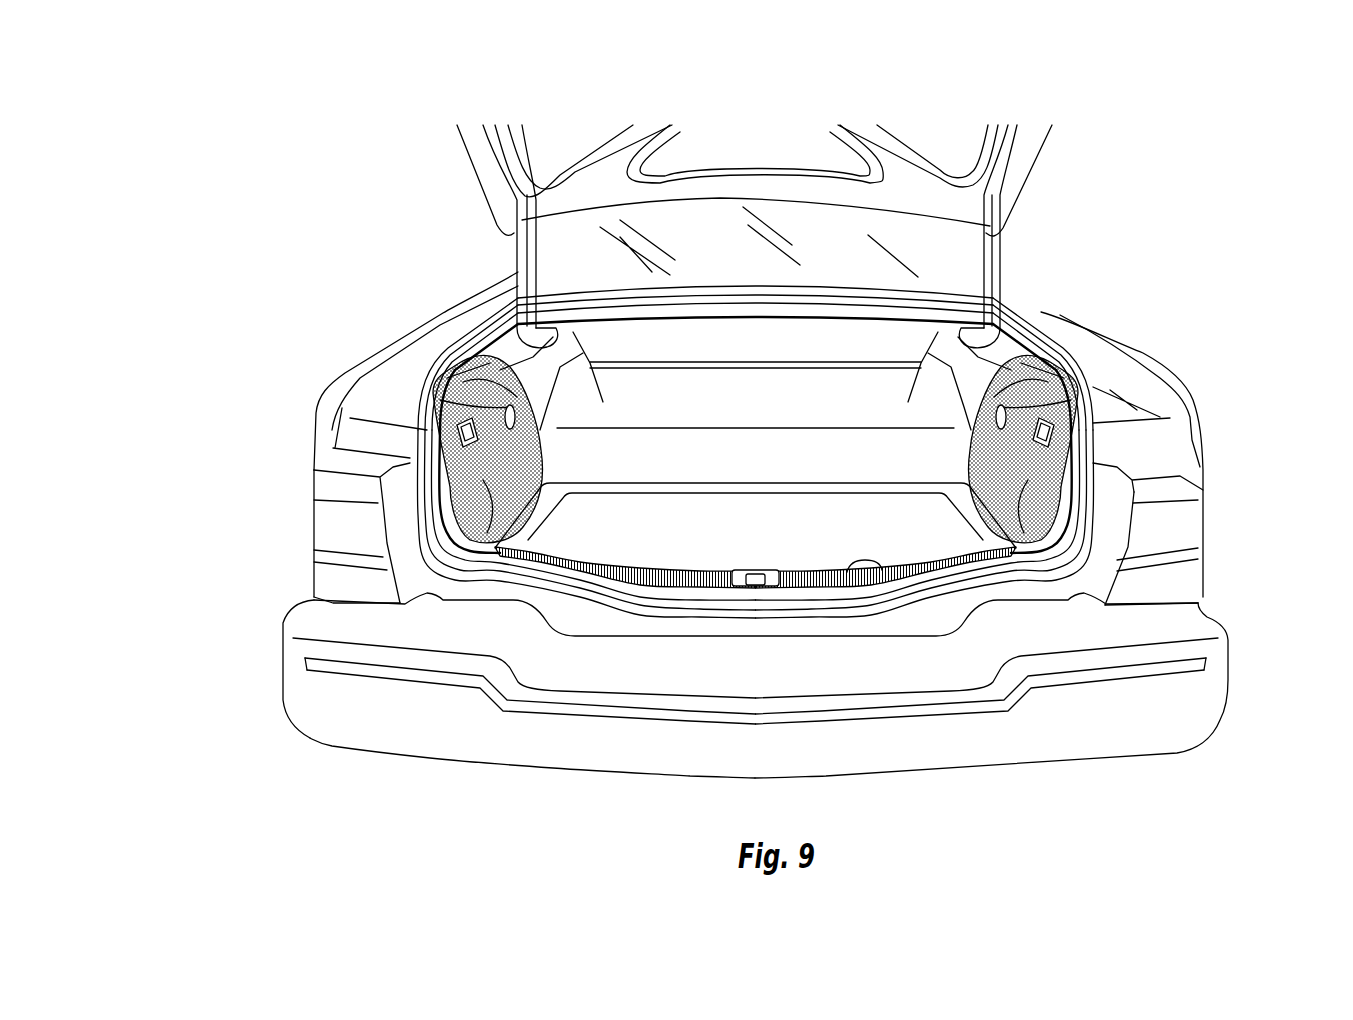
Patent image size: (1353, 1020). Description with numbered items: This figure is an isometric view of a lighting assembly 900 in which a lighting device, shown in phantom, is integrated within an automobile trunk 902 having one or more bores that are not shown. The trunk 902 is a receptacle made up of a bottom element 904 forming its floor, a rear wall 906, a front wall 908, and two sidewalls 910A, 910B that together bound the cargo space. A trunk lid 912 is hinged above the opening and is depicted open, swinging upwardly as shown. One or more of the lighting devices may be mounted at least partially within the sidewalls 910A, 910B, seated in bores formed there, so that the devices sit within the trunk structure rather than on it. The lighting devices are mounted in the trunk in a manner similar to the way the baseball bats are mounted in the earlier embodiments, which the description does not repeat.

The lighting assembly 900 is at (222, 114).
The automobile trunk 902 is at (915, 390).
The bottom element 904 is at (706, 536).
The rear wall 906 is at (900, 577).
The front wall 908 is at (498, 228).
The sidewall 910A is at (490, 488).
The sidewall 910B is at (1027, 482).
The trunk lid 912 is at (518, 192).